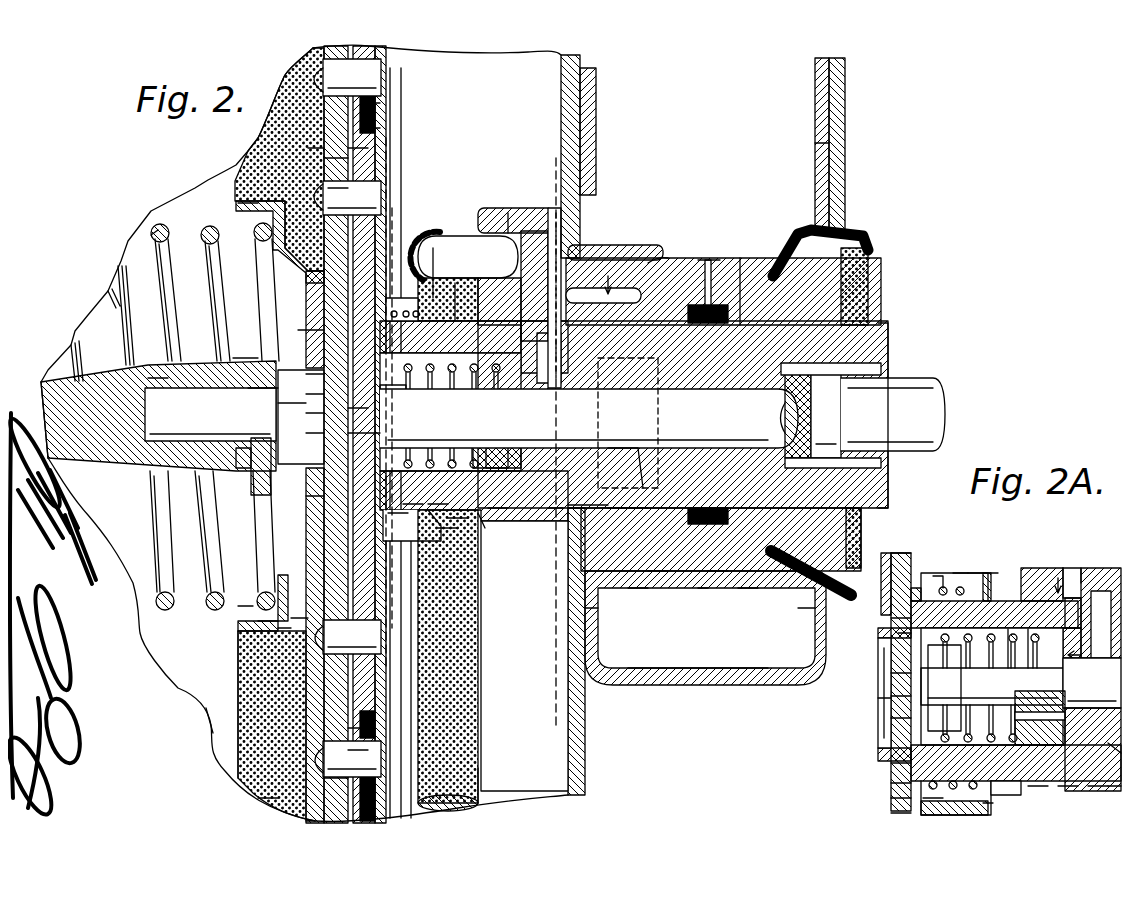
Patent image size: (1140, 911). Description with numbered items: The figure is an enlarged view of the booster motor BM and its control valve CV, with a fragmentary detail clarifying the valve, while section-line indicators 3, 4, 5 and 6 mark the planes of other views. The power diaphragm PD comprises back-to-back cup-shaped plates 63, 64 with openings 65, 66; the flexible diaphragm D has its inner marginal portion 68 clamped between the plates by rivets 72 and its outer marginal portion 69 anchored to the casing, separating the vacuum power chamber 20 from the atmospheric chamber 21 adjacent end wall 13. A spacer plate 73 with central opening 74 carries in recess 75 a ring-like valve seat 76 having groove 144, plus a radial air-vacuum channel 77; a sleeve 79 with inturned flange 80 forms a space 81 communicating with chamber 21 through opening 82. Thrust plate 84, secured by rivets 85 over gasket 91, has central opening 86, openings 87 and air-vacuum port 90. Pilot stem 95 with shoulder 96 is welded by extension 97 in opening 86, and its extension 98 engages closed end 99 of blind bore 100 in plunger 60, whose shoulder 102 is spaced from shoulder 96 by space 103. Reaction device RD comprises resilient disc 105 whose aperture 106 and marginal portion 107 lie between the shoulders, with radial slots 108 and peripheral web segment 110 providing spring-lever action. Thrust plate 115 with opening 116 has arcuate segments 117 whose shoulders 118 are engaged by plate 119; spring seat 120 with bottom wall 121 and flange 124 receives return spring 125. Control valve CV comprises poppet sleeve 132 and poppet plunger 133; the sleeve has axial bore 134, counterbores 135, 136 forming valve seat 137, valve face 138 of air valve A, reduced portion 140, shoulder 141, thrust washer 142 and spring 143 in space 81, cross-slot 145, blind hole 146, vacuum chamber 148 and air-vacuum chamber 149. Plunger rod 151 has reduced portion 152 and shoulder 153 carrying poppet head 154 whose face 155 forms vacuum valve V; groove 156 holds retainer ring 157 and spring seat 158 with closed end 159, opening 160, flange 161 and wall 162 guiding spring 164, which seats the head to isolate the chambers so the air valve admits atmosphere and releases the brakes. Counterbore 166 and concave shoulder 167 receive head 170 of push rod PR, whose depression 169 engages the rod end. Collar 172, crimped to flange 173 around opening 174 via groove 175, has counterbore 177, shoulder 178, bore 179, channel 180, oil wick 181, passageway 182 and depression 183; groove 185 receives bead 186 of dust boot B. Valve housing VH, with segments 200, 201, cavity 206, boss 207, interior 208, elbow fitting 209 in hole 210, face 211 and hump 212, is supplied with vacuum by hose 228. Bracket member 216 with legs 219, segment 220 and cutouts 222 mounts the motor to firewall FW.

In FIG. 2, the power diaphragm assembly PD is at (283, 68).
In FIG. 2, the rivets 72 is at (326, 70).
In FIG. 2, the flat gasket 91 is at (325, 150).
In FIG. 2A, the flat gasket 91 is at (882, 772).
In FIG. 2, the inner circular marginal portion 68 is at (372, 98).
In FIG. 2, the circular opening 66 is at (370, 122).
In FIG. 2, the cup-shaped plate 64 is at (358, 142).
In FIG. 2, the section line 5 is at (372, 133).
In FIG. 2, the circular spacer plate 73 is at (356, 168).
In FIG. 2A, the circular spacer plate 73 is at (893, 545).
In FIG. 2, the variable air-vacuum chamber 149 is at (447, 260).
In FIG. 2A, the variable air-vacuum chamber 149 is at (1022, 620).
In FIG. 2, the section line 3 is at (495, 162).
In FIG. 2, the valve housing VH is at (500, 200).
In FIG. 2A, the hollow boss 207 is at (1080, 560).
In FIG. 2, the arcuate cavity 206 is at (575, 255).
In FIG. 2A, the arcuate cavity 206 is at (1108, 558).
In FIG. 2, the cross-slot 145 is at (605, 240).
In FIG. 2A, the cross-slot 145 is at (1095, 565).
In FIG. 2, the counterbore 177 is at (650, 260).
In FIG. 2, the flared depression 183 is at (700, 280).
In FIG. 2, the rear legs 219 is at (807, 130).
In FIG. 2, the vehicle firewall FW is at (843, 134).
In FIG. 2, the arcuate cutouts 222 is at (812, 222).
In FIG. 2, the dust boot B is at (862, 223).
In FIG. 2, the rivets 85 is at (300, 150).
In FIG. 2, the thrust plate 84 is at (322, 183).
In FIG. 2, the air-vacuum channel 77 is at (272, 225).
In FIG. 2A, the air-vacuum channel 77 is at (880, 582).
In FIG. 2, the peripheral web segment 110 is at (245, 198).
In FIG. 2, the section line 4 is at (384, 215).
In FIG. 2, the thrust washer 142 is at (428, 250).
In FIG. 2A, the thrust washer 142 is at (985, 565).
In FIG. 2, the hole 210 is at (525, 245).
In FIG. 2, the boss interior 208 is at (548, 240).
In FIG. 2, the control valve mechanism CV is at (605, 268).
In FIG. 2A, the control valve mechanism CV is at (1050, 565).
In FIG. 2, the circular face 211 is at (608, 278).
In FIG. 2, the primary counterbore 135 is at (680, 275).
In FIG. 2, the radial passageway 182 is at (702, 300).
In FIG. 2, the axial bore 134 is at (742, 280).
In FIG. 2, the compression spring 125 is at (148, 220).
In FIG. 2, the internal annular groove 156 is at (428, 228).
In FIG. 2A, the internal annular groove 156 is at (930, 570).
In FIG. 2, the air valve A is at (395, 290).
In FIG. 2A, the air valve A is at (893, 622).
In FIG. 2, the upper housing segment 200 is at (605, 280).
In FIG. 2, the elbow fitting 209 is at (468, 257).
In FIG. 2, the collar bore 179 is at (860, 298).
In FIG. 2, the internal annular shoulder 167 is at (862, 330).
In FIG. 2, the poppet sleeve 132 is at (880, 340).
In FIG. 2A, the poppet sleeve 132 is at (1110, 778).
In FIG. 2, the circular thrust plate 115 is at (246, 268).
In FIG. 2, the air-vacuum port 90 is at (300, 255).
In FIG. 2, the angular valve face 138 is at (300, 278).
In FIG. 2A, the angular valve face 138 is at (880, 788).
In FIG. 2, the work-performing plunger 60 is at (35, 377).
In FIG. 2, the axial blind bore 100 is at (160, 335).
In FIG. 2, the annular shoulder 102 is at (222, 340).
In FIG. 2, the pilot stem 95 is at (150, 378).
In FIG. 2, the marginal portion 107 is at (240, 340).
In FIG. 2, the section line 6 is at (300, 326).
In FIG. 2, the coaxial counterbore 166 is at (876, 360).
In FIG. 2, the vacuum chamber 148 is at (570, 359).
In FIG. 2A, the vacuum chamber 148 is at (1120, 743).
In FIG. 2, the cylindrical rod 151 is at (785, 410).
In FIG. 2A, the cylindrical rod 151 is at (1094, 683).
In FIG. 2, the complemental depression 169 is at (795, 400).
In FIG. 2, the push rod head 170 is at (830, 410).
In FIG. 2, the push rod PR is at (948, 416).
In FIG. 2, the central opening 86 is at (272, 372).
In FIG. 2, the radial openings 87 is at (312, 380).
In FIG. 2A, the radial openings 87 is at (880, 752).
In FIG. 2, the central aperture 106 is at (282, 392).
In FIG. 2, the arcuate segments 117 is at (314, 388).
In FIG. 2A, the arcuate segments 117 is at (880, 630).
In FIG. 2, the annular shoulder 96 is at (310, 405).
In FIG. 2, the central circular opening 116 is at (309, 425).
In FIG. 2, the recessed arcuate shoulder 118 is at (347, 405).
In FIG. 2A, the recessed arcuate shoulder 118 is at (944, 688).
In FIG. 2, the reduced extension 97 is at (357, 422).
In FIG. 2A, the reduced extension 97 is at (890, 678).
In FIG. 2, the circular plate 119 is at (394, 407).
In FIG. 2A, the circular plate 119 is at (888, 660).
In FIG. 2, the reduced diameter portion 152 is at (474, 396).
In FIG. 2A, the reduced diameter portion 152 is at (993, 686).
In FIG. 2, the angular valve face 155 is at (513, 400).
In FIG. 2, the annular shoulder 153 is at (513, 416).
In FIG. 2, the poppet plunger 133 is at (589, 418).
In FIG. 2, the space 103 is at (236, 440).
In FIG. 2, the bottom wall 121 is at (252, 430).
In FIG. 2, the blind hole 146 is at (555, 436).
In FIG. 2, the vacuum valve V is at (628, 423).
In FIG. 2A, the vacuum valve V is at (1105, 647).
In FIG. 2, the closed end 99 is at (70, 430).
In FIG. 2, the reduced extension 98 is at (165, 468).
In FIG. 2, the reaction device RD is at (250, 490).
In FIG. 2, the ring-like valve seat 76 is at (302, 490).
In FIG. 2A, the ring-like valve seat 76 is at (880, 606).
In FIG. 2, the central circular opening 74 is at (474, 506).
In FIG. 2A, the central circular opening 74 is at (870, 686).
In FIG. 2, the poppet head 154 is at (560, 502).
In FIG. 2A, the poppet head 154 is at (1050, 705).
In FIG. 2, the oval-shaped hump 212 is at (592, 498).
In FIG. 2, the radial slots 108 is at (262, 515).
In FIG. 2, the circular recess 75 is at (258, 537).
In FIG. 2, the secondary counterbore 136 is at (462, 497).
In FIG. 2A, the secondary counterbore 136 is at (1030, 780).
In FIG. 2, the compression spring 164 is at (470, 500).
In FIG. 2A, the compression spring 164 is at (1000, 620).
In FIG. 2, the angular valve seat 137 is at (505, 497).
In FIG. 2A, the angular valve seat 137 is at (1082, 740).
In FIG. 2, the split retainer ring 157 is at (440, 500).
In FIG. 2A, the split retainer ring 157 is at (880, 545).
In FIG. 2, the reduced diameter portion 140 is at (420, 505).
In FIG. 2, the lower housing segment 201 is at (565, 505).
In FIG. 2A, the lower housing segment 201 is at (1090, 780).
In FIG. 2, the external annular shoulder 141 is at (455, 545).
In FIG. 2A, the external annular shoulder 141 is at (968, 565).
In FIG. 2, the central opening 174 is at (590, 595).
In FIG. 2, the inturned annular flange 80 is at (480, 560).
In FIG. 2A, the inturned annular flange 80 is at (1006, 792).
In FIG. 2, the ring-like space 81 is at (460, 565).
In FIG. 2, the tubular sleeve 79 is at (450, 590).
In FIG. 2A, the tubular sleeve 79 is at (985, 798).
In FIG. 2, the opening 82 is at (448, 660).
In FIG. 2A, the opening 82 is at (960, 800).
In FIG. 2, the abutment shoulder 178 is at (660, 560).
In FIG. 2, the outturned circular flange 173 is at (640, 545).
In FIG. 2, the internal annular channel 180 is at (716, 563).
In FIG. 2, the external annular groove 185 is at (780, 560).
In FIG. 2, the external annular groove 175 is at (636, 580).
In FIG. 2, the oil wick 181 is at (702, 580).
In FIG. 2, the collar 172 is at (740, 582).
In FIG. 2, the annular bead 186 is at (790, 600).
In FIG. 2, the spring seat 120 is at (240, 600).
In FIG. 2, the surface groove 144 is at (265, 610).
In FIG. 2A, the surface groove 144 is at (882, 803).
In FIG. 2, the resilient disc 105 is at (275, 616).
In FIG. 2, the horizontal flange 124 is at (290, 615).
In FIG. 2, the vacuum power chamber 20 is at (190, 690).
In FIG. 2, the booster motor BM is at (210, 711).
In FIG. 2, the circular opening 65 is at (340, 718).
In FIG. 2, the cup-shaped plate 63 is at (340, 742).
In FIG. 2, the outer circular marginal portion 69 is at (330, 770).
In FIG. 2, the power diaphragm D is at (268, 797).
In FIG. 2, the flexible hose 228 is at (462, 760).
In FIG. 2, the atmospheric chamber 21 is at (562, 745).
In FIG. 2, the end wall 13 is at (570, 785).
In FIG. 2, the horizontal segment 220 is at (690, 677).
In FIG. 2, the lower bracket member 216 is at (746, 677).
In FIG. 2A, the compression spring 143 is at (955, 565).
In FIG. 2A, the cup-shaped spring seat 158 is at (945, 580).
In FIG. 2A, the flanged open end 161 is at (883, 708).
In FIG. 2A, the cylindrical wall 162 is at (994, 608).
In FIG. 2A, the circular opening 160 is at (1016, 749).
In FIG. 2A, the closed end 159 is at (930, 795).